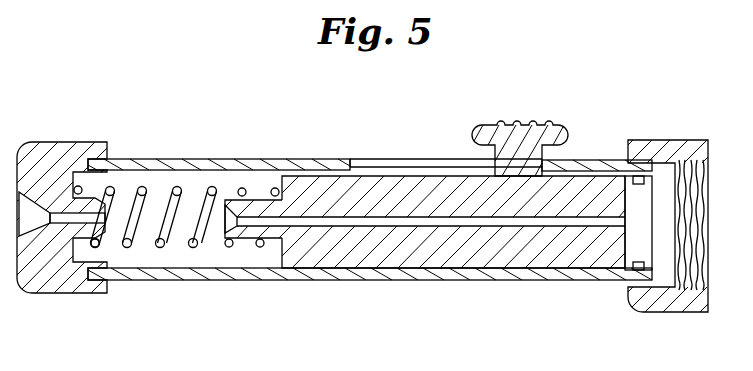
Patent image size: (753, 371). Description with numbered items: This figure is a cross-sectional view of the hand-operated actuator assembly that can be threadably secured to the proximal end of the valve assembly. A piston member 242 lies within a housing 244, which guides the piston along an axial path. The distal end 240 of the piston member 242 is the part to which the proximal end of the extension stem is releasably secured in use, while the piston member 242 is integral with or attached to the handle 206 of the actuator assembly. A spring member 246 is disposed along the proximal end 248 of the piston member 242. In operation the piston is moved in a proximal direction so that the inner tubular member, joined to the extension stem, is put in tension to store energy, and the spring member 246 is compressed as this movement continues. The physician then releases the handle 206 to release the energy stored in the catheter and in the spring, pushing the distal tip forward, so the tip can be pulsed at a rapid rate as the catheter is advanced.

The handle 206 is at (518, 138).
The distal end of piston member 240 is at (635, 198).
The piston member 242 is at (426, 178).
The housing 244 is at (367, 283).
The spring member 246 is at (163, 200).
The proximal end of piston member 248 is at (274, 176).